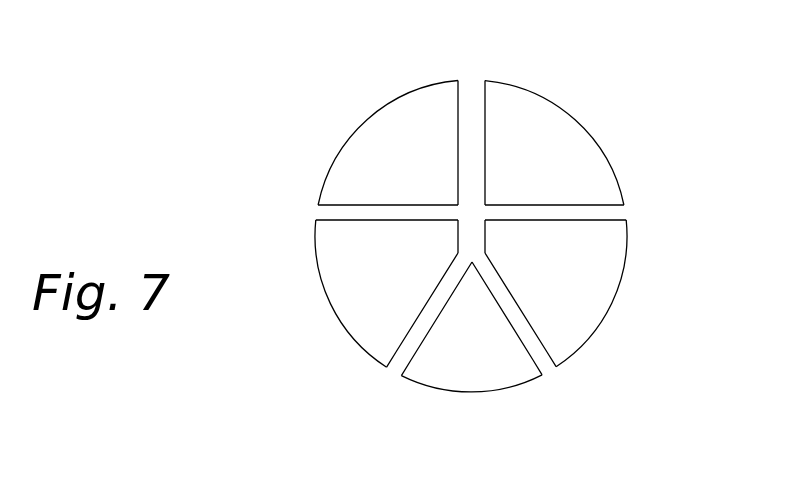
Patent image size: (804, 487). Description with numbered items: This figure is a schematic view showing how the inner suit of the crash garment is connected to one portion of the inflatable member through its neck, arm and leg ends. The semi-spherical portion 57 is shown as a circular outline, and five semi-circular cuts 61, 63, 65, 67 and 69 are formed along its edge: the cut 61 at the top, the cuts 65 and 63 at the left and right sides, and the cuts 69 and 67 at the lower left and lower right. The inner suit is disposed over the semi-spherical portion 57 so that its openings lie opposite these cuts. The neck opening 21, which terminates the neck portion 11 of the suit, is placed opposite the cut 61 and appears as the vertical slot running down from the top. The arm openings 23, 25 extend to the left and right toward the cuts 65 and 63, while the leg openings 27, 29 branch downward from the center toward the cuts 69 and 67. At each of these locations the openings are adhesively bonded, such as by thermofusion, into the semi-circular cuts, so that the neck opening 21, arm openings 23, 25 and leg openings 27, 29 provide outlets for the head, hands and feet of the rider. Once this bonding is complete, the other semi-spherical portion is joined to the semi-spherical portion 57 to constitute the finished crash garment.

The neck portion 11 is at (485, 160).
The semi-spherical portion 57 is at (582, 119).
The neck opening 21 is at (471, 83).
The arm opening 23 is at (319, 219).
The arm opening 25 is at (613, 212).
The leg opening 27 is at (392, 368).
The leg opening 29 is at (544, 370).
The semi-circular cut 61 is at (473, 80).
The semi-circular cut 63 is at (632, 214).
The semi-circular cut 65 is at (317, 218).
The semi-circular cut 67 is at (547, 373).
The semi-circular cut 69 is at (392, 371).